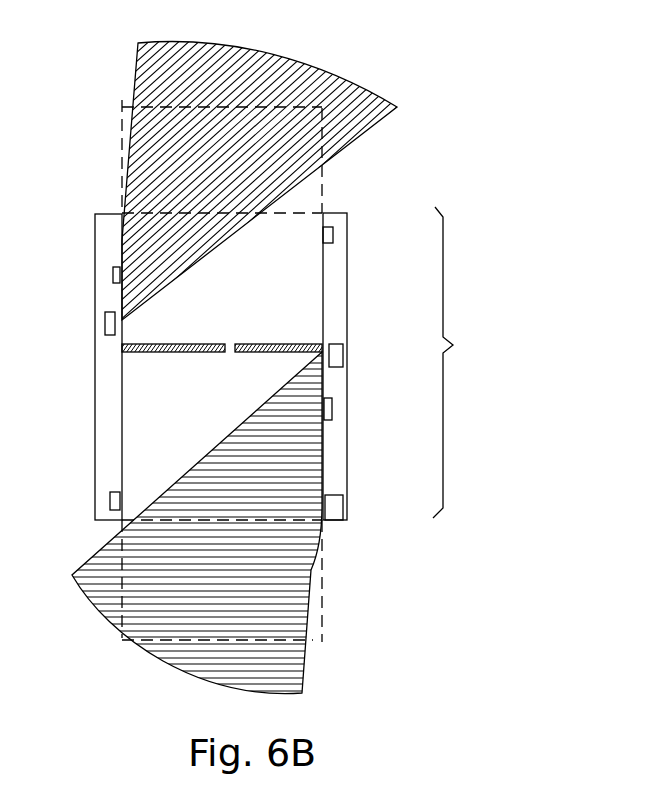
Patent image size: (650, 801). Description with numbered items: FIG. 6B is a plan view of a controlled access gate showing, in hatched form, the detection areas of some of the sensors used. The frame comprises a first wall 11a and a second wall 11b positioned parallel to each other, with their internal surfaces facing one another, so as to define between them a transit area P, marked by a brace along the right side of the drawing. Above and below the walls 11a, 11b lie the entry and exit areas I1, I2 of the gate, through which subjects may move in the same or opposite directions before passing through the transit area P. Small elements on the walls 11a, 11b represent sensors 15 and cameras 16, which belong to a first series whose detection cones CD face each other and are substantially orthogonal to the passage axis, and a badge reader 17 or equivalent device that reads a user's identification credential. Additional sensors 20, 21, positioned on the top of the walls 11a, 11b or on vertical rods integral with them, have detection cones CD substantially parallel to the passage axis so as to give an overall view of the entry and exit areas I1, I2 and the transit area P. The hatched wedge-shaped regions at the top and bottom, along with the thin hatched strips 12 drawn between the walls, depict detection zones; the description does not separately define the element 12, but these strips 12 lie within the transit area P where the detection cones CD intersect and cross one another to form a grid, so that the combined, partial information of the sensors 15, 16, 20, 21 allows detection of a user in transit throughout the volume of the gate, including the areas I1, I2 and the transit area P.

The first wall 11a is at (110, 225).
The second wall 11b is at (338, 215).
The partition plates 12 is at (296, 345).
The sensor 15 is at (230, 365).
The camera 16 is at (113, 273).
The badge reader 17 is at (333, 507).
The sensor 20 is at (105, 323).
The sensor 21 is at (335, 357).
The entry and exit area I1 is at (266, 609).
The entry and exit area I2 is at (298, 132).
The detection cone CD is at (316, 583).
The transit area P is at (488, 358).